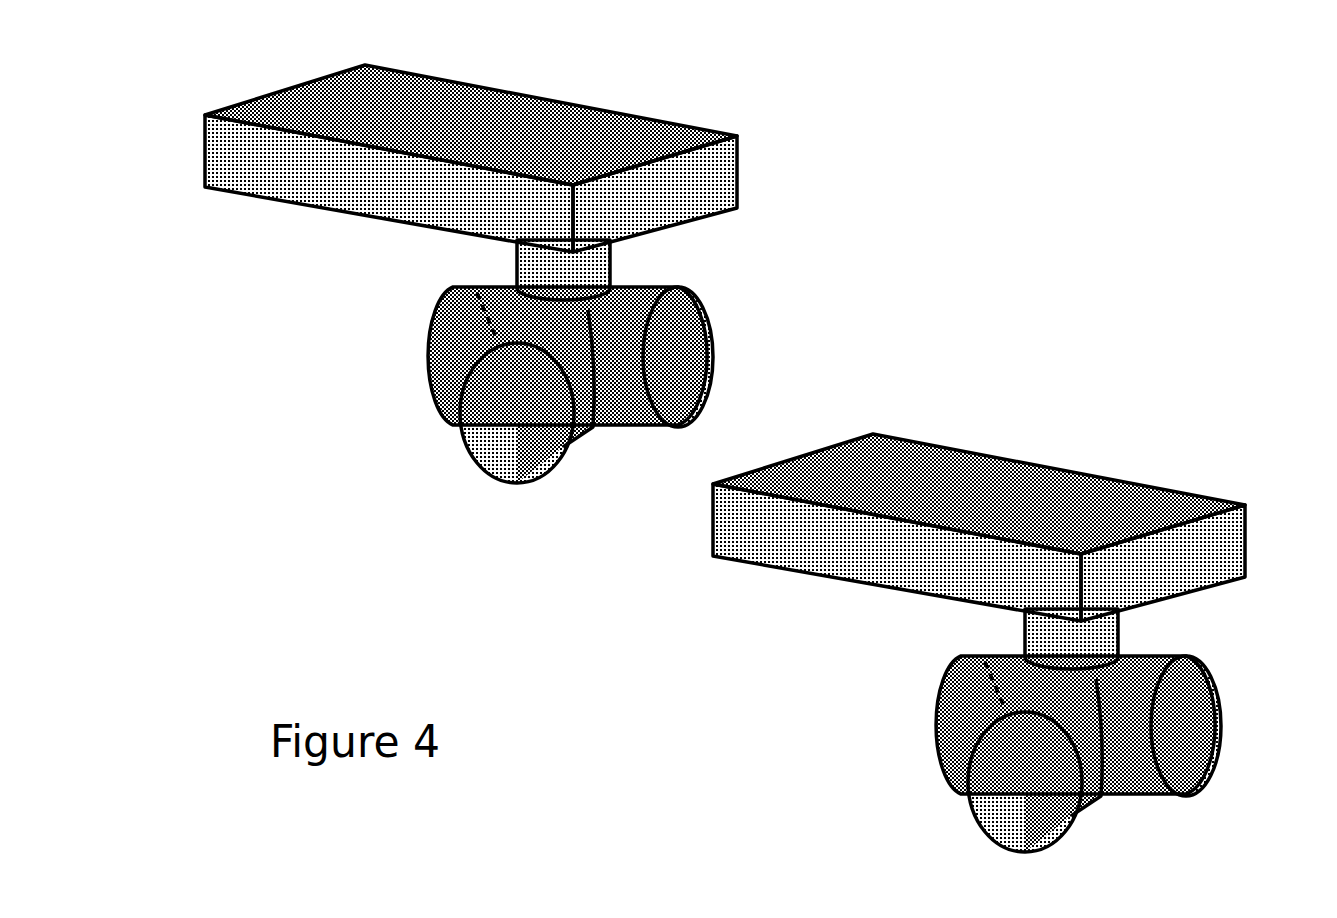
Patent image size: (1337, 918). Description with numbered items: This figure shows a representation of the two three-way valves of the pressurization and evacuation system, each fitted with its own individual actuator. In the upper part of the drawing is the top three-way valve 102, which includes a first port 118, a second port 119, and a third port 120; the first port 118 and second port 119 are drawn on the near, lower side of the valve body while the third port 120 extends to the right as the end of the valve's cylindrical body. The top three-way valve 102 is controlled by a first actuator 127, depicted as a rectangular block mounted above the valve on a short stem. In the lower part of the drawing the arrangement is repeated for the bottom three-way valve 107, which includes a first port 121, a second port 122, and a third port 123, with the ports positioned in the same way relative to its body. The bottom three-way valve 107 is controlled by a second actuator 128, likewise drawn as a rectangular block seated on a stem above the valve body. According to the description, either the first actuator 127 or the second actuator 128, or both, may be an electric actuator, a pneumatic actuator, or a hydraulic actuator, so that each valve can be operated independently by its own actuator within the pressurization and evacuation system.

The top 3-way valve 102 is at (513, 158).
The first actuator 127 is at (427, 267).
The first port 118 is at (522, 385).
The second port 119 is at (456, 413).
The third port 120 is at (708, 357).
The bottom 3-way valve 107 is at (1015, 527).
The second actuator 128 is at (905, 637).
The first port 121 is at (1029, 754).
The second port 122 is at (962, 782).
The third port 123 is at (1216, 726).